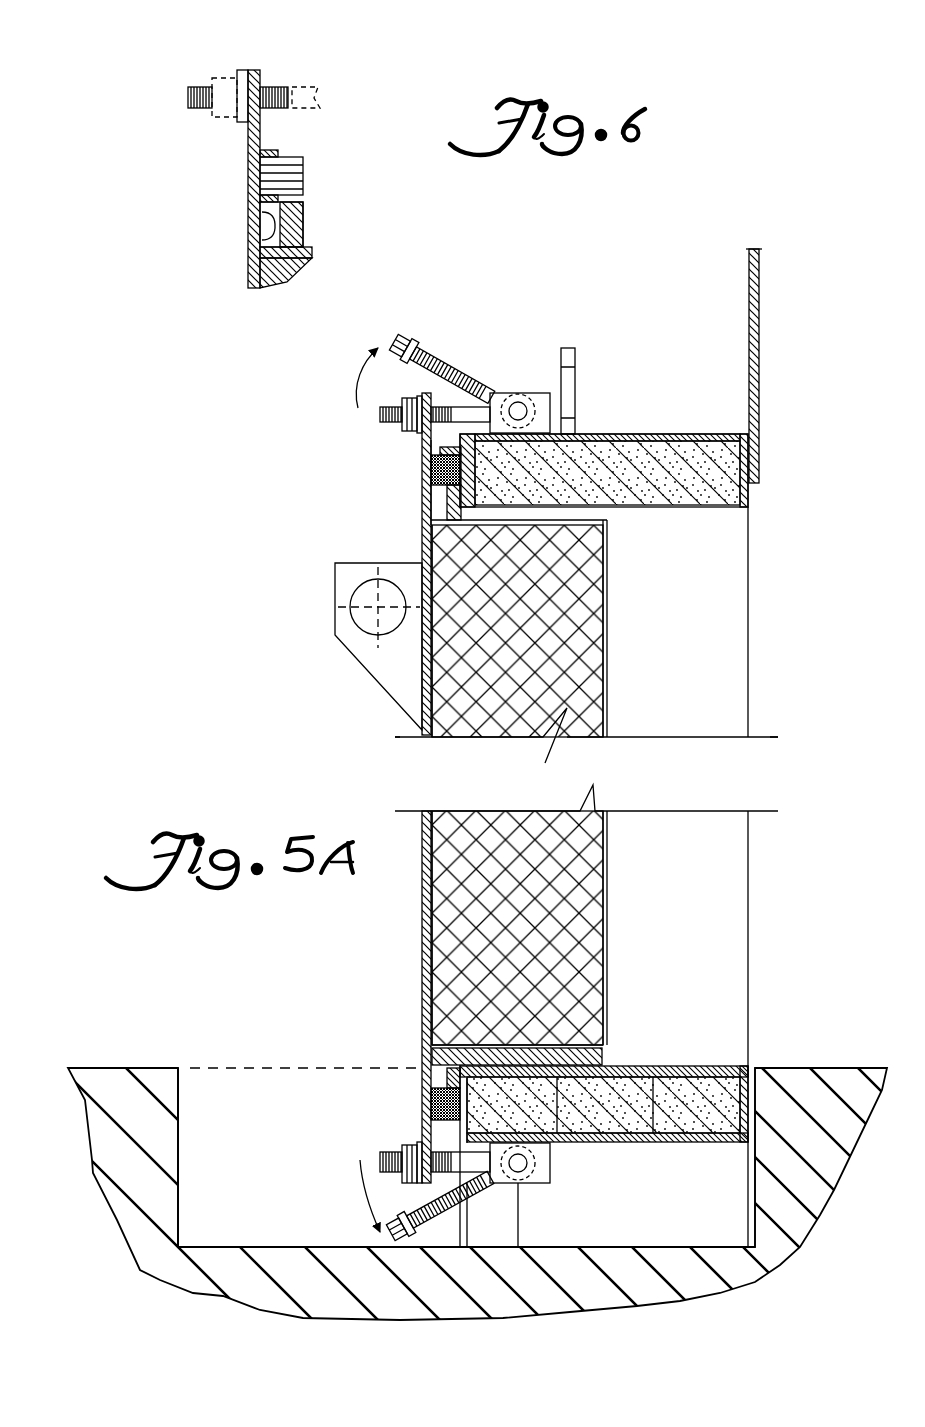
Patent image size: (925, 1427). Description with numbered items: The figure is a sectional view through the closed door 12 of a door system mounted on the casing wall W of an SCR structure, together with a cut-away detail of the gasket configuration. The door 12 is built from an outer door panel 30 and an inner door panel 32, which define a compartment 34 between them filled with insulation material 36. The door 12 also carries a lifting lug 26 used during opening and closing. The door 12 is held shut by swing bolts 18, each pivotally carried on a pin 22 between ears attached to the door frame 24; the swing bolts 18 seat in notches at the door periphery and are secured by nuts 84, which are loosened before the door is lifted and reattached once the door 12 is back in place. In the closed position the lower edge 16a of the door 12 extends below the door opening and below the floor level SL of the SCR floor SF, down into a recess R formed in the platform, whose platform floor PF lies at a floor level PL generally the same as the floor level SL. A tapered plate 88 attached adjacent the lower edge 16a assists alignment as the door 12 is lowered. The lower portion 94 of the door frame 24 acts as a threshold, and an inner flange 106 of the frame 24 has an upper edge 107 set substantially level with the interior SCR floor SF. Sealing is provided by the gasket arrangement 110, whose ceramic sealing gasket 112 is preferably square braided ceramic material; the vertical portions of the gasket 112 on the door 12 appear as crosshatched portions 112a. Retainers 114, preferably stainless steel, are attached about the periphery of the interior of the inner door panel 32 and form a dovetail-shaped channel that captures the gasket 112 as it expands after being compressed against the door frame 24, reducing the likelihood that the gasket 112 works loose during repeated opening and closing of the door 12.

In FIG. 5A, the door 12 is at (418, 906).
In FIG. 5A, the lower edge of the door 16a is at (432, 1112).
In FIG. 6, the swing bolt 18 is at (300, 80).
In FIG. 5A, the swing bolt 18 is at (452, 366).
In FIG. 5A, the pin 22 is at (545, 1148).
In FIG. 5A, the door frame 24 is at (651, 430).
In FIG. 5A, the lifting lug 26 is at (355, 668).
In FIG. 6, the outer door panel 30 is at (247, 133).
In FIG. 5A, the outer door panel 30 is at (420, 1046).
In FIG. 5A, the inner door panel 32 is at (607, 920).
In FIG. 5A, the compartment 34 is at (567, 880).
In FIG. 5A, the insulation material 36 is at (557, 1027).
In FIG. 6, the nut 84 is at (217, 70).
In FIG. 5A, the nut 84 is at (414, 343).
In FIG. 5A, the plate 88 is at (578, 1060).
In FIG. 5A, the lower portion of door frame 94 is at (662, 1142).
In FIG. 5A, the inner flange 106 is at (749, 1088).
In FIG. 5A, the upper edge of flange 107 is at (748, 1064).
In FIG. 5A, the gasket arrangement 110 is at (418, 488).
In FIG. 6, the ceramic sealing gasket 112 is at (303, 163).
In FIG. 5A, the ceramic sealing gasket 112 is at (434, 455).
In FIG. 6, the crosshatched portion of gasket 112a is at (303, 223).
In FIG. 5A, the crosshatched portion of gasket 112a is at (447, 502).
In FIG. 6, the retainer 114 is at (270, 217).
In FIG. 5A, the casing wall W is at (750, 312).
In FIG. 5A, the recess R is at (233, 1090).
In FIG. 5A, the platform floor PF is at (123, 1066).
In FIG. 5A, the floor level of platform PL is at (68, 1069).
In FIG. 5A, the SCR floor SF is at (838, 1064).
In FIG. 5A, the floor level of SCR floor SL is at (263, 1068).